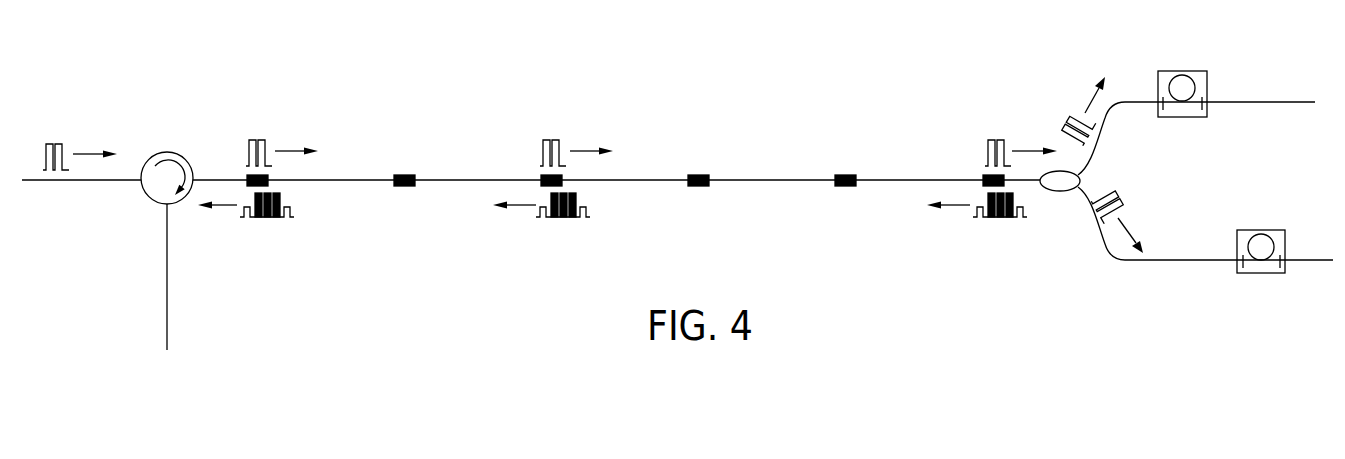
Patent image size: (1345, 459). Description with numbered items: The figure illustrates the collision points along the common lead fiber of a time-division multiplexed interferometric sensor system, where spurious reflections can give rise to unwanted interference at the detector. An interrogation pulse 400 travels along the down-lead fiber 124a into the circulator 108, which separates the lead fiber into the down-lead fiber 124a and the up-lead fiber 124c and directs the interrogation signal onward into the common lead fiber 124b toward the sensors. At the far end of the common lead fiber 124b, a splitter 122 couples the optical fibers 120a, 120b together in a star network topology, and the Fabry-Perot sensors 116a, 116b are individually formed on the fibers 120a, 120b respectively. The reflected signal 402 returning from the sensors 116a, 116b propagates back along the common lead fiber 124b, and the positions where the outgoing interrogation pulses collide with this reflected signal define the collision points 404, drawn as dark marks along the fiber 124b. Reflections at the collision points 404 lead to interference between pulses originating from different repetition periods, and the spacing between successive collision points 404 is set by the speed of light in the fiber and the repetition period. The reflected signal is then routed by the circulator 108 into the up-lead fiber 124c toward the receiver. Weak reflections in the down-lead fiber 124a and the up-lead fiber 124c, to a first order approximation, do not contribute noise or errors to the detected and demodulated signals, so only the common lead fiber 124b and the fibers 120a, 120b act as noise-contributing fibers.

The input optical pulse 400 is at (50, 143).
The circulator 108 is at (167, 152).
The down-lead fiber 124a is at (78, 182).
The common lead fiber 124b is at (363, 180).
The up-lead fiber 124c is at (167, 298).
The collision points 404 is at (845, 175).
The reflected pulses 402 is at (997, 220).
The splitter 122 is at (1062, 191).
The optical fiber 120a is at (1110, 115).
The optical fiber 120b is at (1182, 258).
The Fabry-Perot sensor 116a is at (1186, 70).
The Fabry-Perot sensor 116b is at (1258, 230).